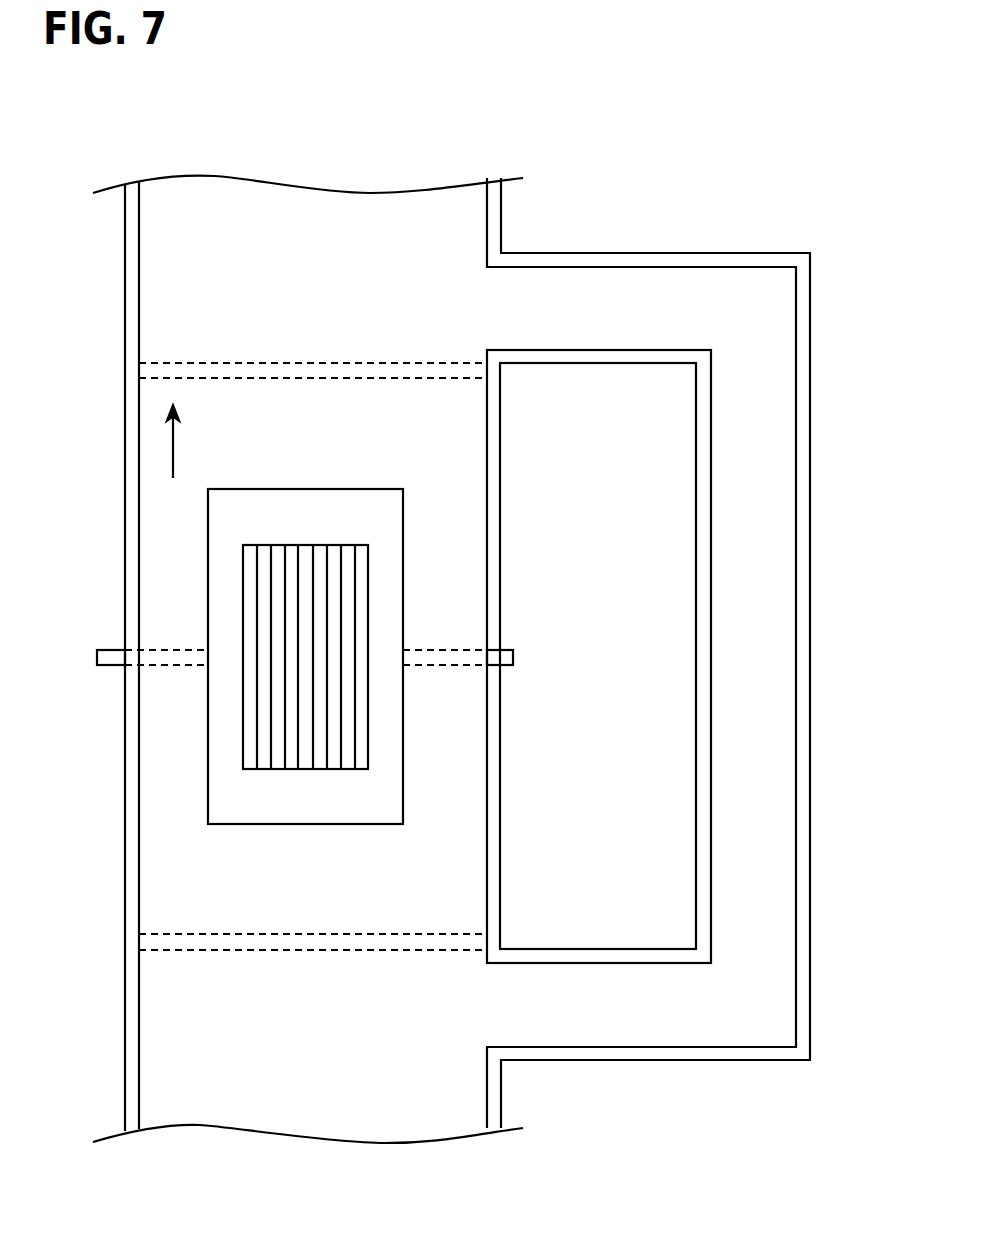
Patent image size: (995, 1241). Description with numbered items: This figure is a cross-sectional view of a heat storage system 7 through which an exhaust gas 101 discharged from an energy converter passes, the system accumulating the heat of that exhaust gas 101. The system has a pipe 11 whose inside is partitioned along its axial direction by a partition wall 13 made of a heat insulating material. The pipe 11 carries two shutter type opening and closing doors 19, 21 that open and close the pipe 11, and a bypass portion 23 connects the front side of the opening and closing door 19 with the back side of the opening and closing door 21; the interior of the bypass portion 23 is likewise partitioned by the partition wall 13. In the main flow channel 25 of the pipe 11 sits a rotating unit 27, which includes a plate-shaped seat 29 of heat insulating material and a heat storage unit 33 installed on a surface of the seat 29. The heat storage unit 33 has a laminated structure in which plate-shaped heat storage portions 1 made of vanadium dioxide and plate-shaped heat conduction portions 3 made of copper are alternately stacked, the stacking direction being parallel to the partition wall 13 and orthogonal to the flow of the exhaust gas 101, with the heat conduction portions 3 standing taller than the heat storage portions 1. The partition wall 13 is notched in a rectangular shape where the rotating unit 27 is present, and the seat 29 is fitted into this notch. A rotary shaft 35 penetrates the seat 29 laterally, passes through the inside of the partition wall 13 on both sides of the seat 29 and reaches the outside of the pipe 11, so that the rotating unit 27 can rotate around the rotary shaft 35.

The heat storage portion 1 is at (262, 770).
The heat conduction portion 3 is at (250, 770).
The heat storage system 7 is at (705, 193).
The pipe 11 is at (124, 545).
The partition wall 13 is at (445, 560).
The opening and closing door 19 is at (282, 946).
The opening and closing door 21 is at (303, 370).
The bypass portion 23 is at (765, 698).
The main flow channel 25 is at (165, 740).
The rotating unit 27 is at (362, 520).
The seat 29 is at (360, 795).
The heat storage unit 33 is at (280, 545).
The rotary shaft 35 is at (97, 655).
The exhaust gas 101 is at (172, 443).